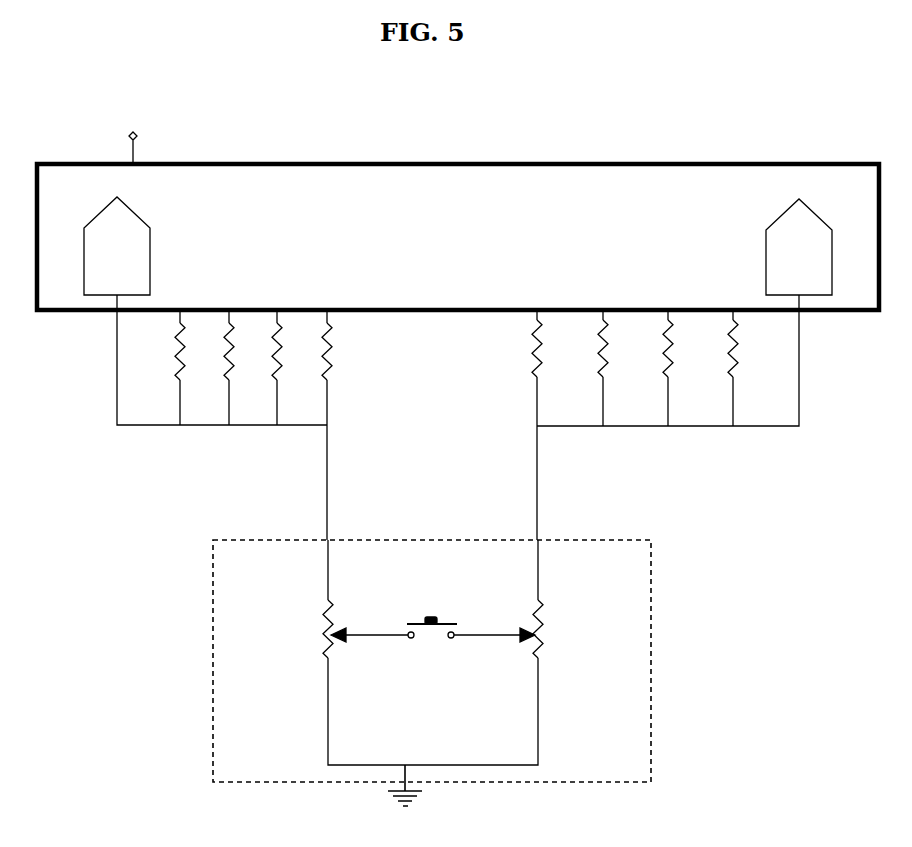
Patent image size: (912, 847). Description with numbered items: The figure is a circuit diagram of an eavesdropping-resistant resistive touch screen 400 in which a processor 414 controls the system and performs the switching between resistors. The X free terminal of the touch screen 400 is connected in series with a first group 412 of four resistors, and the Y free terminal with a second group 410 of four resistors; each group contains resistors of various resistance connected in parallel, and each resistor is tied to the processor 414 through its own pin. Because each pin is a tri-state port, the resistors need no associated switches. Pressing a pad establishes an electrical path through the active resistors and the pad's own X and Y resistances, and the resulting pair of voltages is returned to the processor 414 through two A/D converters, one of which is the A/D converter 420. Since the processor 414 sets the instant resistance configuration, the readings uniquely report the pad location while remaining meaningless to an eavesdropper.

The processor 414 is at (478, 162).
The A/D converter 420 is at (143, 222).
The first group of resistors 412 is at (116, 394).
The second group of resistors 410 is at (665, 442).
The resistive touch screen 400 is at (652, 566).